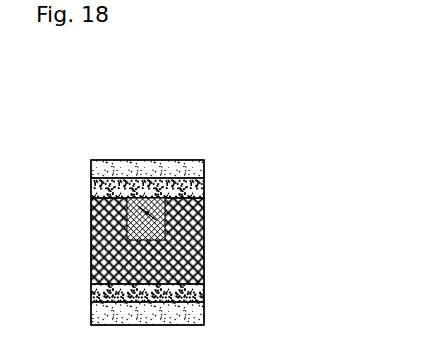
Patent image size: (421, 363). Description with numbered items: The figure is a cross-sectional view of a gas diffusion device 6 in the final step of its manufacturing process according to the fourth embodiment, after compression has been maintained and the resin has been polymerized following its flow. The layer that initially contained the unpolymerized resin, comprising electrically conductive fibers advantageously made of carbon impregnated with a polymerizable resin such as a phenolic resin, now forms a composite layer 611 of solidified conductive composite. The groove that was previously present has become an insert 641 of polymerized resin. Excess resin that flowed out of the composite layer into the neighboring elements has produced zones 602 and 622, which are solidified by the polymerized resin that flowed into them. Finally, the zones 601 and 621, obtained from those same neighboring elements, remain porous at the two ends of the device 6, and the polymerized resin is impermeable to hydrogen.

The gas diffusion device 6 is at (204, 135).
The porous zone 621 is at (204, 166).
The solidified zone 622 is at (204, 184).
The insert of polymerized resin 641 is at (125, 200).
The composite layer of solidified conductive composite 611 is at (148, 236).
The solidified zone 602 is at (204, 288).
The porous zone 601 is at (204, 308).